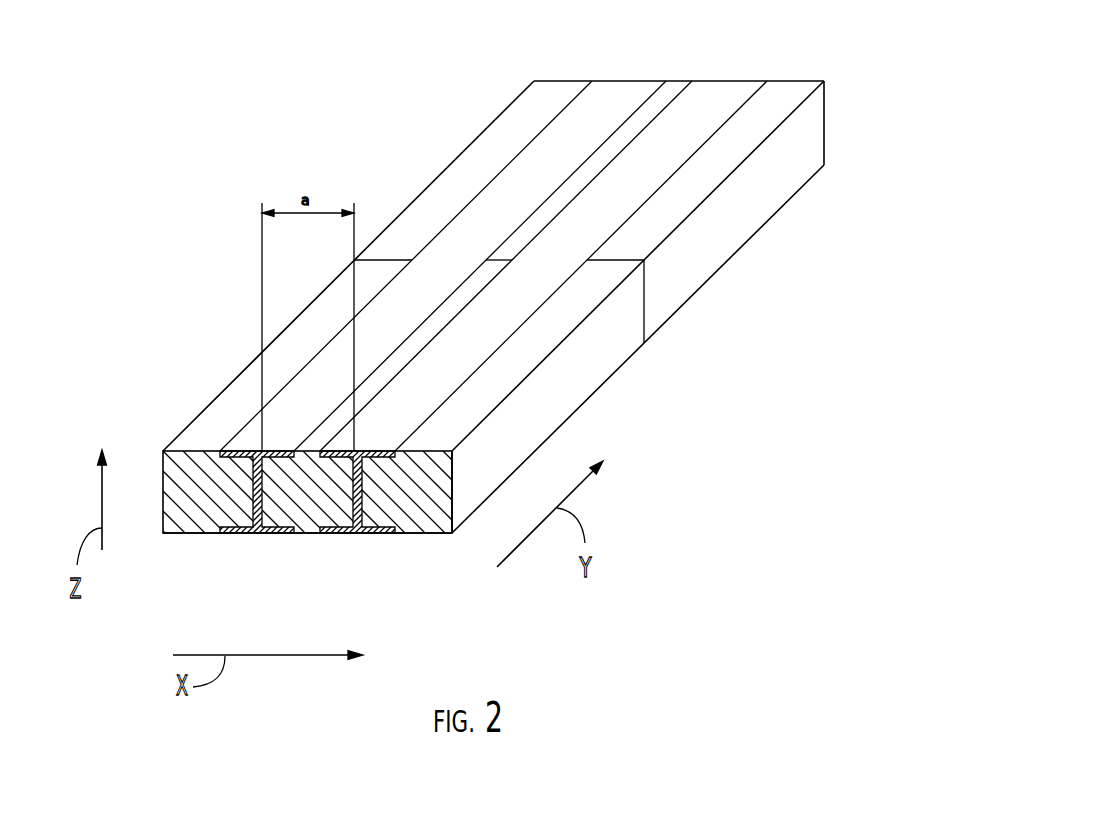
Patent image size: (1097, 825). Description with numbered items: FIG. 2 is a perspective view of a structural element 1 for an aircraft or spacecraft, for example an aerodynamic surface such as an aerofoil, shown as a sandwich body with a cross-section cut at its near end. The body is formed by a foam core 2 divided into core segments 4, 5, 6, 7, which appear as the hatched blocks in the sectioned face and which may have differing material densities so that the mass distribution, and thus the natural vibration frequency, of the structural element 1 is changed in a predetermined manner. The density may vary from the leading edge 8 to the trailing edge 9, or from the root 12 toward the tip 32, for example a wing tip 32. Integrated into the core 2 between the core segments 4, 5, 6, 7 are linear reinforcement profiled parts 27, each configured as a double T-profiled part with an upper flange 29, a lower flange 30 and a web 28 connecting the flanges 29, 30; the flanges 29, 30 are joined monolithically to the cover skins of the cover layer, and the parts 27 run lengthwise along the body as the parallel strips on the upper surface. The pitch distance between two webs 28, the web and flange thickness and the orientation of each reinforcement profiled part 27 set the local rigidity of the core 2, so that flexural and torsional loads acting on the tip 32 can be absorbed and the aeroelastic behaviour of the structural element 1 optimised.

The structural element 1 is at (240, 128).
The core 2 is at (198, 438).
The core segment 4 is at (307, 535).
The core segment 5 is at (437, 525).
The core segment 6 is at (745, 207).
The core segment 7 is at (672, 93).
The leading edge 8 is at (427, 185).
The trailing edge 9 is at (663, 245).
The root 12 is at (403, 535).
The reinforcement profiled part 27 is at (518, 192).
The web 28 is at (252, 487).
The flange 29 is at (242, 453).
The flange 30 is at (232, 535).
The tip 32 is at (607, 78).